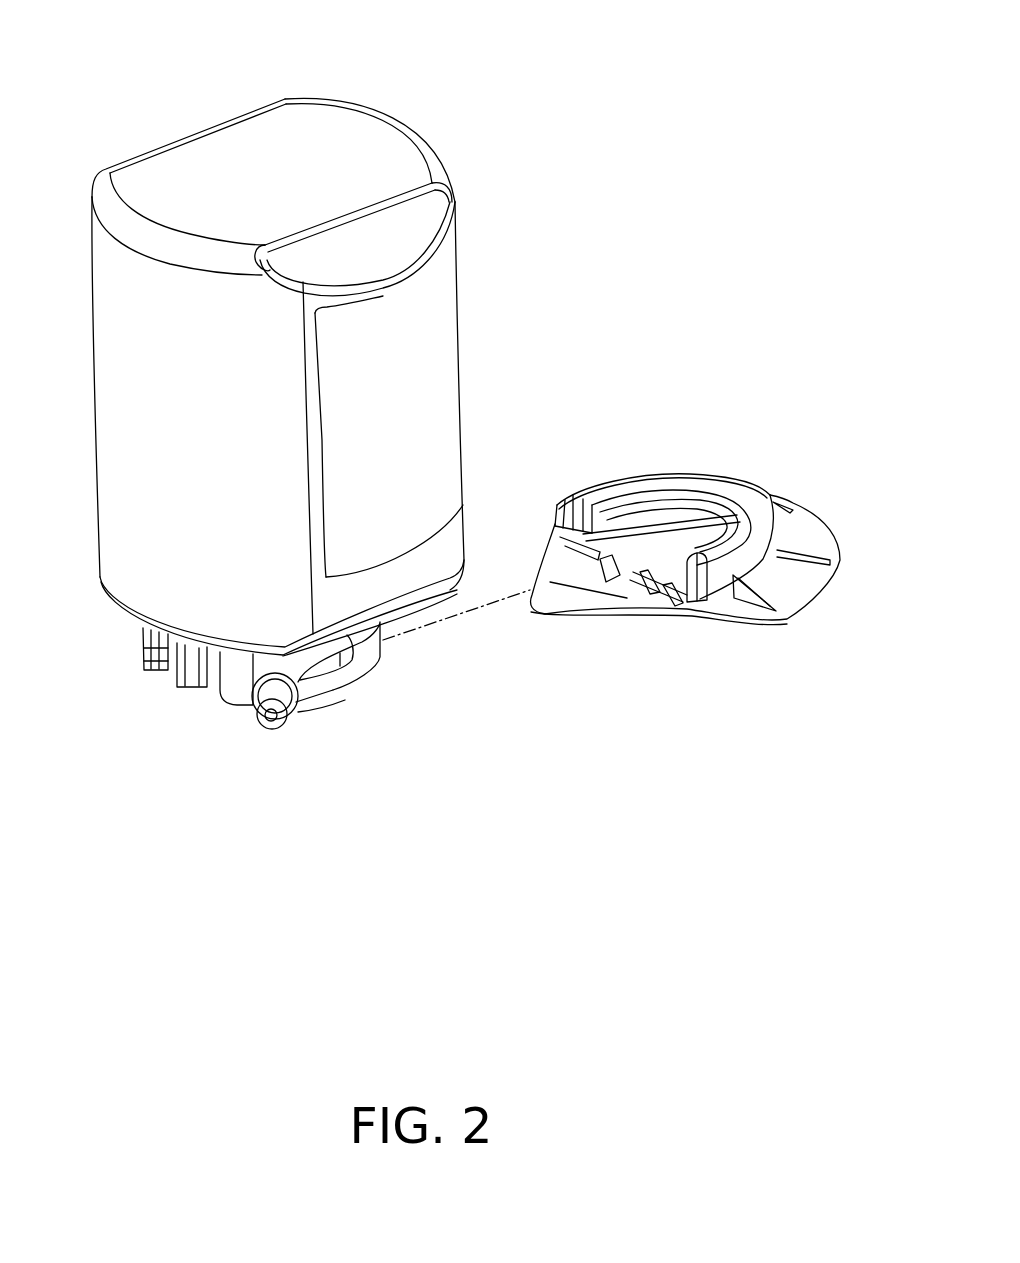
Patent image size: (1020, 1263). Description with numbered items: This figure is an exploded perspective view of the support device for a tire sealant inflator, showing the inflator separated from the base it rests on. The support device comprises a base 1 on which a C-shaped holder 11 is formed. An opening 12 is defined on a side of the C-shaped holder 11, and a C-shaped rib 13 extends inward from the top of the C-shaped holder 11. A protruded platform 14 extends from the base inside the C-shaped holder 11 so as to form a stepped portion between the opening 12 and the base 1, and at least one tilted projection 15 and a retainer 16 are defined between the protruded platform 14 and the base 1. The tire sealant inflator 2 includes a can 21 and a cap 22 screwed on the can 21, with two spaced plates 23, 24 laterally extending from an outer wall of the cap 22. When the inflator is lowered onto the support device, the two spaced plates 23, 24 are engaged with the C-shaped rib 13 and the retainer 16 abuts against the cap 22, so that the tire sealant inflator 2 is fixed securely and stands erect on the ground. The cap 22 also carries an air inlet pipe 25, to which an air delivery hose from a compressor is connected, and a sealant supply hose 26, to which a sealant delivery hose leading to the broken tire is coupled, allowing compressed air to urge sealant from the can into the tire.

The base 1 is at (678, 571).
The C-shaped holder 11 is at (760, 567).
The opening 12 is at (650, 575).
The C-shaped rib 13 is at (627, 490).
The protruded platform 14 is at (672, 588).
The tilted projection 15 is at (556, 539).
The retainer 16 is at (602, 565).
The tire sealant inflator 2 is at (312, 100).
The can 21 is at (441, 358).
The cap 22 is at (238, 697).
The spaced plate 23 is at (385, 672).
The spaced plate 24 is at (343, 703).
The air inlet pipe 25 is at (278, 723).
The sealant supply hose 26 is at (152, 673).